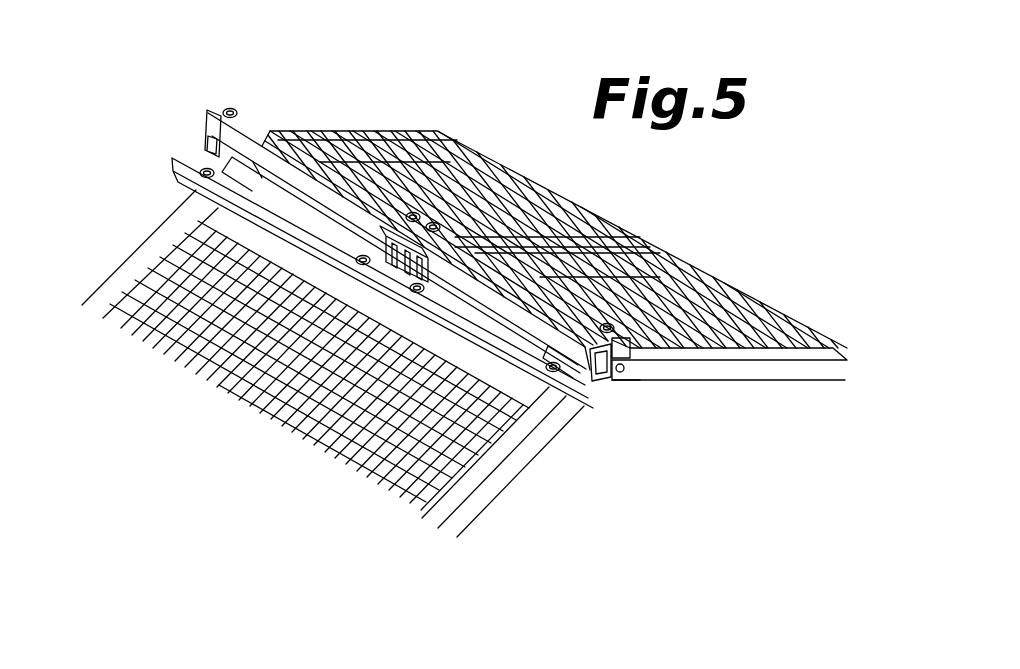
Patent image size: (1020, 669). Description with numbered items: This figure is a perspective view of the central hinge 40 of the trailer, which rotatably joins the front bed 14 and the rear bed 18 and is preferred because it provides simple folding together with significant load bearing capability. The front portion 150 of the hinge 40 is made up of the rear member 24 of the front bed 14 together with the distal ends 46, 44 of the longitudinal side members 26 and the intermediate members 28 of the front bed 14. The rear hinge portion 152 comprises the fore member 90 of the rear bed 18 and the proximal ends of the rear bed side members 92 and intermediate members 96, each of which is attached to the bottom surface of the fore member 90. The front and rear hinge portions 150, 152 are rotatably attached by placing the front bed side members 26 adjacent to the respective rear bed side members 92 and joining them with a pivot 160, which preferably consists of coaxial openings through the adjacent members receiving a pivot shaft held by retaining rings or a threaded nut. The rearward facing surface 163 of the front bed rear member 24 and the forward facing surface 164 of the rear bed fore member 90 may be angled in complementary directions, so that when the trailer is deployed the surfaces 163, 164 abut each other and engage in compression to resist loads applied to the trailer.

The front bed 14 is at (111, 270).
The rear bed 18 is at (782, 372).
The rear member 24 is at (498, 353).
The longitudinal side members 26 is at (148, 233).
The intermediate members 28 is at (238, 378).
The second hinge 40 is at (165, 98).
The distal ends of the intermediate members 44 is at (378, 232).
The distal ends of the side members 46 is at (262, 180).
The fore member 90 is at (560, 315).
The side members 92 is at (427, 130).
The intermediate members 96 is at (525, 283).
The front portion 150 is at (572, 425).
The rear hinge portion 152 is at (650, 383).
The pivot 160 is at (620, 377).
The rearward facing surface 163 is at (313, 218).
The forward facing surface 164 is at (577, 322).